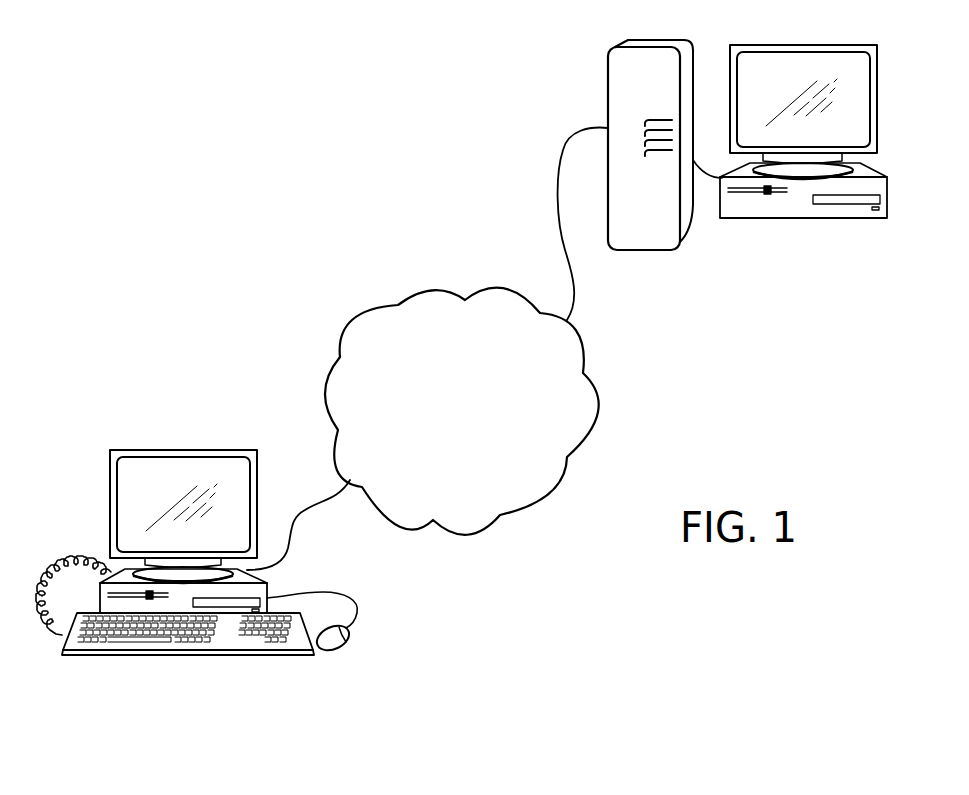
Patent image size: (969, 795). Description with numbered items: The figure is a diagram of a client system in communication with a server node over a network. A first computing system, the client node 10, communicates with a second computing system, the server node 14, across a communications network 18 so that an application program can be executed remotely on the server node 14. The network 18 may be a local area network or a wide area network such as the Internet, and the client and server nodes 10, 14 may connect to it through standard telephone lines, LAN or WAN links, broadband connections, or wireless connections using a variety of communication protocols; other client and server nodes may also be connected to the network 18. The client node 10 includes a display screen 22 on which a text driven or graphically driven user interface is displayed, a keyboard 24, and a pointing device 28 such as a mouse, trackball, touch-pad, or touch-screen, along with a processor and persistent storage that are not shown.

The first computing system (client node) 10 is at (143, 450).
The second computing system (server node) 14 is at (833, 45).
The communications network 18 is at (418, 293).
The display screen 22 is at (143, 492).
The keyboard 24 is at (157, 657).
The pointing device 28 is at (345, 633).